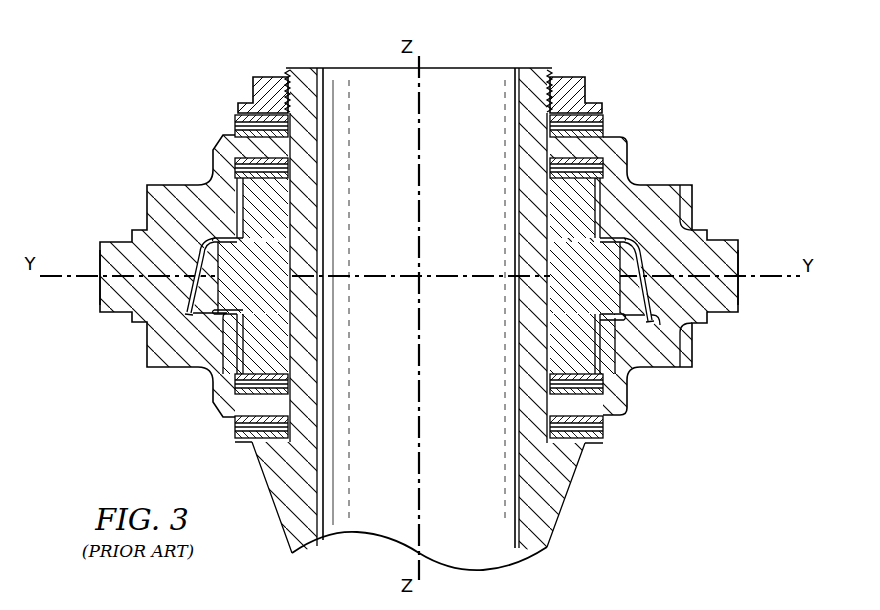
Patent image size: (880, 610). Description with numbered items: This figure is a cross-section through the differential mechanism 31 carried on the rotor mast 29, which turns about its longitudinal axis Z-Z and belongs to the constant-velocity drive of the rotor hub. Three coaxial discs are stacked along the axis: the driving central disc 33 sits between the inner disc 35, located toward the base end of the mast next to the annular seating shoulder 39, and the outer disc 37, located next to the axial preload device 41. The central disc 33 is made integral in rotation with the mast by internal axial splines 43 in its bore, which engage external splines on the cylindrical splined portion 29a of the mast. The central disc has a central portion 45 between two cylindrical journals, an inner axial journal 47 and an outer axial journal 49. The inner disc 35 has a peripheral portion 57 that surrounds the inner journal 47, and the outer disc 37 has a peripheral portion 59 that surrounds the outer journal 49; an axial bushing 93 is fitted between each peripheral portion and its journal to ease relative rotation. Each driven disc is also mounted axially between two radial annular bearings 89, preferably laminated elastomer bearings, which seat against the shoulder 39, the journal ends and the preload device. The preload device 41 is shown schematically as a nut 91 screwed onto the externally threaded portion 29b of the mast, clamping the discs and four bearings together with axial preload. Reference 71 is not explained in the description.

The mast 29 is at (566, 506).
The cylindrical splined portion 29a is at (520, 214).
The externally threaded portion 29b is at (532, 68).
The differential mechanism 31 is at (165, 58).
The central disc 33 is at (210, 302).
The inner disc 35 is at (212, 414).
The outer disc 37 is at (220, 133).
The seating shoulder 39 is at (272, 500).
The axial preload device 41 is at (250, 88).
The internal axial splines 43 is at (322, 235).
The central portion 45 is at (642, 272).
The inner axial journal 47 is at (617, 326).
The outer axial journal 49 is at (640, 214).
The peripheral portion 57 is at (214, 382).
The peripheral portion 59 is at (190, 185).
The boss 71 is at (100, 282).
The radial annular bearings 89 is at (604, 116).
The nut 91 is at (573, 76).
The axial bushings 93 is at (603, 200).